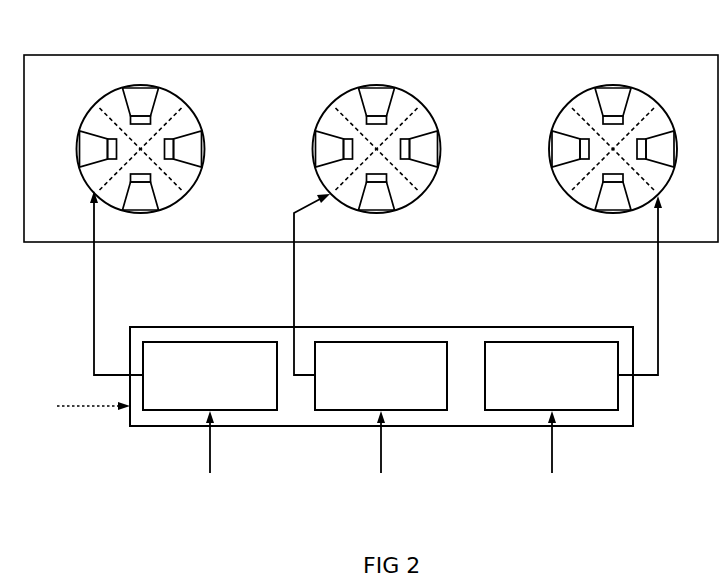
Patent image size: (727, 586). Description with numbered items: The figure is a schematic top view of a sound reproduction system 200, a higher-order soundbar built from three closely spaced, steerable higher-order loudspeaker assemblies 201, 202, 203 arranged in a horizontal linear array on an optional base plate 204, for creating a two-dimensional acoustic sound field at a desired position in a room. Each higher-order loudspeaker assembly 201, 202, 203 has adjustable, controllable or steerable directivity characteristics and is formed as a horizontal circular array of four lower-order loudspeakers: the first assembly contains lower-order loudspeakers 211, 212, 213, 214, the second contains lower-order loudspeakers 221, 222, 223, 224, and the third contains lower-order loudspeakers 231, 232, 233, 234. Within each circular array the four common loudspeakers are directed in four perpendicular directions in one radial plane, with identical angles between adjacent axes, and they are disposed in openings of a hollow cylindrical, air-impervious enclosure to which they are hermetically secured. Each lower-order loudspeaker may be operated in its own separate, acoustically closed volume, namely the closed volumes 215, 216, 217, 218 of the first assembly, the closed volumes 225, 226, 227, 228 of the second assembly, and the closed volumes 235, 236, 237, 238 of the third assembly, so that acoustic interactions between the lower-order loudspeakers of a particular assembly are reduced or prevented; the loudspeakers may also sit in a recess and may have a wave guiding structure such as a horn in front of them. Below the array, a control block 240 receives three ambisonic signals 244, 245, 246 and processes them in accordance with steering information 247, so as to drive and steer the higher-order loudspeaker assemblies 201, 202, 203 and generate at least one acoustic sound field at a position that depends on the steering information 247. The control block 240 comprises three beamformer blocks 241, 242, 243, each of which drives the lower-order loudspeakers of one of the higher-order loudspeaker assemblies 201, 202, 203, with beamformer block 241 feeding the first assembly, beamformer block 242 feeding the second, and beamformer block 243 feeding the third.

The sound reproduction system 200 is at (240, 232).
The higher-order loudspeaker assembly 201 is at (193, 105).
The higher-order loudspeaker assembly 202 is at (430, 107).
The higher-order loudspeaker assembly 203 is at (667, 107).
The base plate 204 is at (46, 70).
The lower-order loudspeaker 211 is at (81, 170).
The lower-order loudspeaker 212 is at (155, 96).
The lower-order loudspeaker 213 is at (206, 149).
The lower-order loudspeaker 214 is at (169, 195).
The acoustically closed volume 215 is at (97, 127).
The acoustically closed volume 216 is at (115, 105).
The acoustically closed volume 217 is at (187, 123).
The acoustically closed volume 218 is at (113, 192).
The lower-order loudspeaker 221 is at (313, 149).
The lower-order loudspeaker 222 is at (391, 96).
The lower-order loudspeaker 223 is at (442, 149).
The lower-order loudspeaker 224 is at (404, 195).
The acoustically closed volume 225 is at (330, 127).
The acoustically closed volume 226 is at (350, 103).
The acoustically closed volume 227 is at (420, 127).
The acoustically closed volume 228 is at (348, 193).
The lower-order loudspeaker 231 is at (554, 169).
The lower-order loudspeaker 232 is at (628, 96).
The lower-order loudspeaker 233 is at (672, 167).
The lower-order loudspeaker 234 is at (594, 203).
The acoustically closed volume 235 is at (568, 127).
The acoustically closed volume 236 is at (588, 103).
The acoustically closed volume 237 is at (657, 127).
The acoustically closed volume 238 is at (640, 193).
The control block 240 is at (522, 327).
The beamformer block 241 is at (260, 412).
The beamformer block 242 is at (437, 412).
The beamformer block 243 is at (608, 412).
The ambisonic signal 244 is at (208, 455).
The ambisonic signal 245 is at (381, 455).
The ambisonic signal 246 is at (551, 455).
The steering information 247 is at (77, 410).